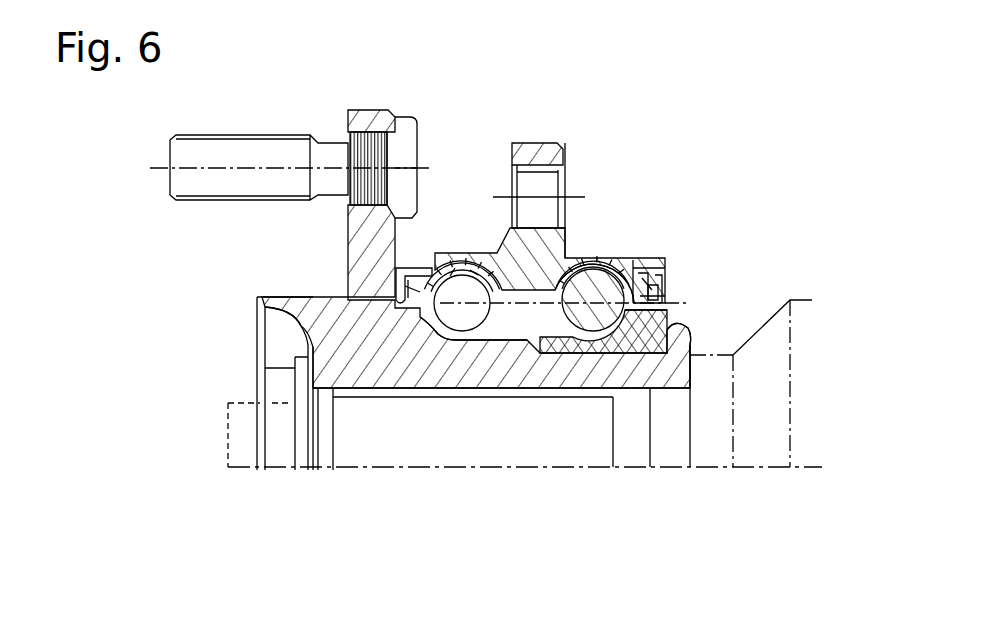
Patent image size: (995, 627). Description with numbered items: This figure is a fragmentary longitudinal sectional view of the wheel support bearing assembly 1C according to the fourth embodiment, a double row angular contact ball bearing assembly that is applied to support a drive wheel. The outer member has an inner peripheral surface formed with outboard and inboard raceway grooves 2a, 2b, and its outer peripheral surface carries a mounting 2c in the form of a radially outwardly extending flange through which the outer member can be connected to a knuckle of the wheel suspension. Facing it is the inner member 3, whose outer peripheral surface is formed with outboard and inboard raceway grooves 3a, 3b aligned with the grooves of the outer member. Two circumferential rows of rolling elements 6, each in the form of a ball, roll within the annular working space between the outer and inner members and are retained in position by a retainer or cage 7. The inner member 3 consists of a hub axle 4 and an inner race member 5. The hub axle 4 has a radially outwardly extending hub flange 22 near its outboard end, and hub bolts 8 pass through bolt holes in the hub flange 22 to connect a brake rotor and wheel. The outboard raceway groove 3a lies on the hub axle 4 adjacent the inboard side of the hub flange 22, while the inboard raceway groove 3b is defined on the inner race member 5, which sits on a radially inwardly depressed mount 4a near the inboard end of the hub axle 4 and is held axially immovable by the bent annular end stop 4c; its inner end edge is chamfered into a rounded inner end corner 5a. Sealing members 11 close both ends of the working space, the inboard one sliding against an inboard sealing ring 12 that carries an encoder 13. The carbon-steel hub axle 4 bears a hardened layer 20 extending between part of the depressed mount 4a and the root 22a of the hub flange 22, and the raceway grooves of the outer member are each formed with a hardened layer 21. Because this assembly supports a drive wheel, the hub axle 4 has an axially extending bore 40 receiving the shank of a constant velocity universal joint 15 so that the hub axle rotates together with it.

The wheel support bearing assembly 1C is at (542, 169).
The outboard raceway groove 2a is at (470, 258).
The inboard raceway groove 2b is at (618, 285).
The mounting 2c is at (543, 142).
The inner member 3 is at (500, 387).
The outboard raceway groove 3a is at (360, 322).
The inboard raceway groove 3b is at (652, 318).
The hub axle 4 is at (521, 387).
The depressed mount 4a is at (560, 355).
The annular end stop 4c is at (678, 347).
The inner race member 5 is at (471, 377).
The rounded inner end corner 5a is at (690, 345).
The rolling elements 6 is at (465, 262).
The retainer or cage 7 is at (478, 276).
The hub bolt 8 is at (226, 150).
The sealing member 11 is at (416, 270).
The inboard sealing ring 12 is at (655, 290).
The encoder 13 is at (655, 300).
The constant velocity universal joint 15 is at (750, 342).
The hardened layer 20 is at (436, 343).
The hardened layer 21 is at (490, 262).
The hub flange 22 is at (321, 179).
The root of the hub flange 22a is at (368, 263).
The axially extending bore 40 is at (555, 440).